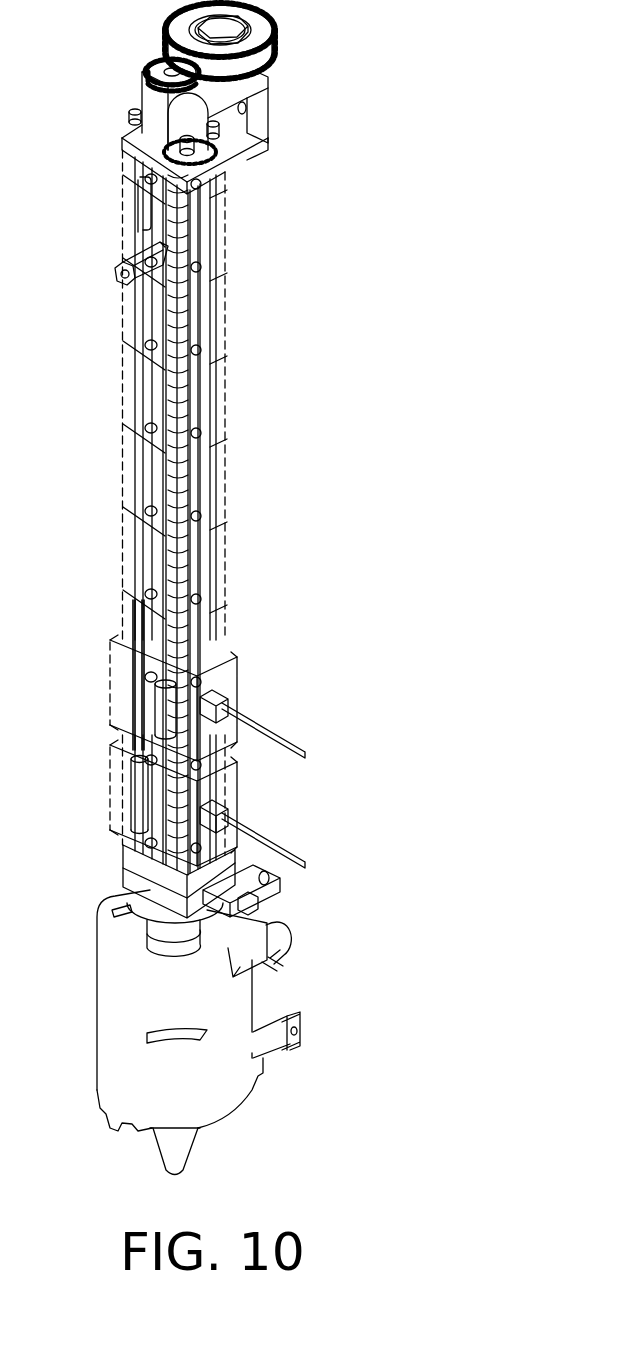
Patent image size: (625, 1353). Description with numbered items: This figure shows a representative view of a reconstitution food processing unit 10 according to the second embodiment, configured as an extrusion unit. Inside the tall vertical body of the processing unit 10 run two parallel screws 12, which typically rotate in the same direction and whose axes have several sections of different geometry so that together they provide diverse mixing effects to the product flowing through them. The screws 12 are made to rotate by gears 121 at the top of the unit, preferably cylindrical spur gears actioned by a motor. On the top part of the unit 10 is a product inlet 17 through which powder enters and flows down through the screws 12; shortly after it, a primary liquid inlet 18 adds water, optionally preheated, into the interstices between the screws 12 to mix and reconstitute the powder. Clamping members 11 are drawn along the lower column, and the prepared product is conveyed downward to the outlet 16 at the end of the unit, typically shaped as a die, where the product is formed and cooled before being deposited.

The food processing unit 10 is at (278, 433).
The clamp 11 is at (112, 678).
The screws 12 is at (170, 381).
The outlet 16 is at (160, 1158).
The product inlet 17 is at (140, 198).
The primary liquid inlet 18 is at (114, 273).
The gears 121 is at (165, 32).